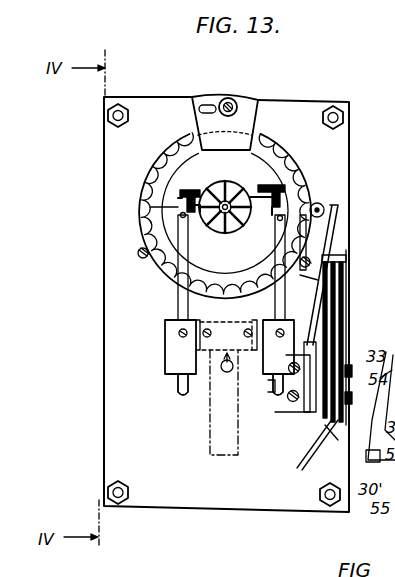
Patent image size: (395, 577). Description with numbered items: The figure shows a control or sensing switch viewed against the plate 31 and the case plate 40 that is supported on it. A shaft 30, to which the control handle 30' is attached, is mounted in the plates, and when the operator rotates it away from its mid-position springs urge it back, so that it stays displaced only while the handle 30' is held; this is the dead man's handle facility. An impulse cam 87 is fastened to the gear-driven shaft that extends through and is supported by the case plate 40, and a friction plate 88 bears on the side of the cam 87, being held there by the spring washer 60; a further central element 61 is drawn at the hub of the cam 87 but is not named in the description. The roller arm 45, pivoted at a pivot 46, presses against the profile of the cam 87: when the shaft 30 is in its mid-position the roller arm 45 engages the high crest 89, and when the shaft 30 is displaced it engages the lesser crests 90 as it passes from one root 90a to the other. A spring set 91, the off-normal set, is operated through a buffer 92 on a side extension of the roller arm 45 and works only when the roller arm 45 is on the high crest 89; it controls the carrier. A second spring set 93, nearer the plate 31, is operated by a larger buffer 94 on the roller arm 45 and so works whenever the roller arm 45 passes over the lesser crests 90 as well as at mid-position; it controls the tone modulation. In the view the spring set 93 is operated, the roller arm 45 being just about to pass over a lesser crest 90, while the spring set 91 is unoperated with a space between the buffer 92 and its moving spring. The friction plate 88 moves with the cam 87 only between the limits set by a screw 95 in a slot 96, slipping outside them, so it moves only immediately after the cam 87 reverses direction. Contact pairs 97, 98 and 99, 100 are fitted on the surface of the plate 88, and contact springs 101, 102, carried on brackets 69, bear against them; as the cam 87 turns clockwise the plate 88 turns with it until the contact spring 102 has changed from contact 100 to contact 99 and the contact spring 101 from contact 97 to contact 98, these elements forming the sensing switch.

The plate 31 is at (280, 122).
The impulse cam 87 is at (282, 150).
The friction plate 88 is at (180, 167).
The root 90a is at (292, 170).
The lesser crest 90 is at (323, 205).
The screw 95 is at (231, 105).
The slot 96 is at (211, 108).
The contact 97 is at (189, 192).
The contact 98 is at (176, 206).
The contact 99 is at (264, 213).
The spoked wheel 61 is at (230, 193).
The spring washer 60 is at (231, 218).
The contact 100 is at (249, 226).
The contact spring 101 is at (180, 295).
The bracket 69 is at (170, 358).
The shaft 30 is at (226, 335).
The handle 30' is at (202, 408).
The case plate 40 is at (151, 232).
The roller arm 45 is at (334, 212).
The high crest 89 is at (322, 250).
The second spring set 93 is at (340, 258).
The buffer 92 is at (336, 270).
The larger buffer 94 is at (313, 284).
The contact spring 102 is at (330, 292).
The pivot 46 is at (318, 350).
The spring set 91 is at (308, 455).